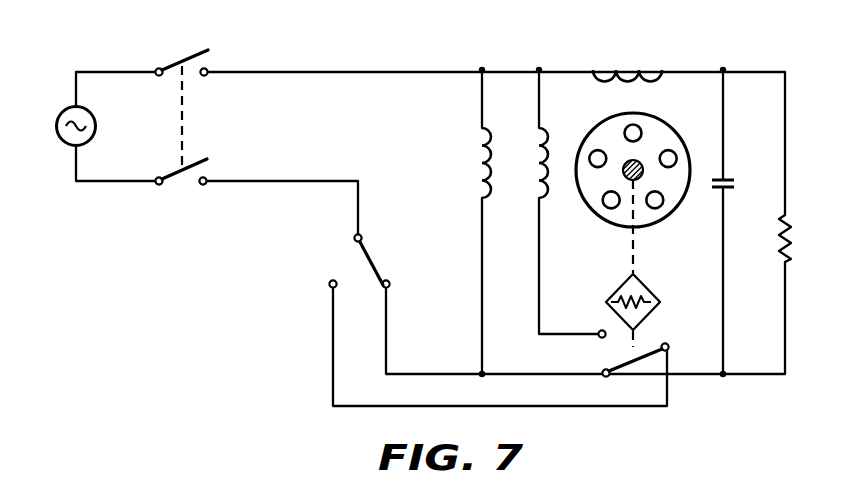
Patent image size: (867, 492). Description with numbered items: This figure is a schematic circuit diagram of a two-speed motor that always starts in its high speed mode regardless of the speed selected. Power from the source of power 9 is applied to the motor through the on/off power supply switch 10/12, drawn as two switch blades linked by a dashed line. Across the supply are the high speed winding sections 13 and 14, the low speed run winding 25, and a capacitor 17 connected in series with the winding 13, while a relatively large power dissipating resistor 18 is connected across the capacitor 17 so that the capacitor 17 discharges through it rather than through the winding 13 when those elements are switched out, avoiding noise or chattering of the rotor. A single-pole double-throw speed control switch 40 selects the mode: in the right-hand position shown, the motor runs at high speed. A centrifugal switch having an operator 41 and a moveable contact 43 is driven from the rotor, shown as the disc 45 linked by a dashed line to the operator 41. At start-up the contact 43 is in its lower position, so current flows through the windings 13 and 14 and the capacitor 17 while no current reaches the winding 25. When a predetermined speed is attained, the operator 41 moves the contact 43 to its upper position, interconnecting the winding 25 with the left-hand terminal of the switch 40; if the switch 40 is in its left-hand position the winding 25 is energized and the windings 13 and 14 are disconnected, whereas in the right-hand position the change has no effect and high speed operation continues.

The power supply 9 is at (57, 121).
The power supply switch 10 is at (167, 66).
The power supply switch 12 is at (168, 189).
The winding 13 is at (650, 72).
The winding 14 is at (492, 130).
The low speed winding 25 is at (557, 140).
The capacitor 17 is at (728, 178).
The power dissipating resistor 18 is at (788, 222).
The single-pole double-throw switch 40 is at (374, 258).
The centrifugal switch operator 41 is at (650, 292).
The moveable contact 43 is at (650, 346).
The rotor disc 45 is at (666, 214).